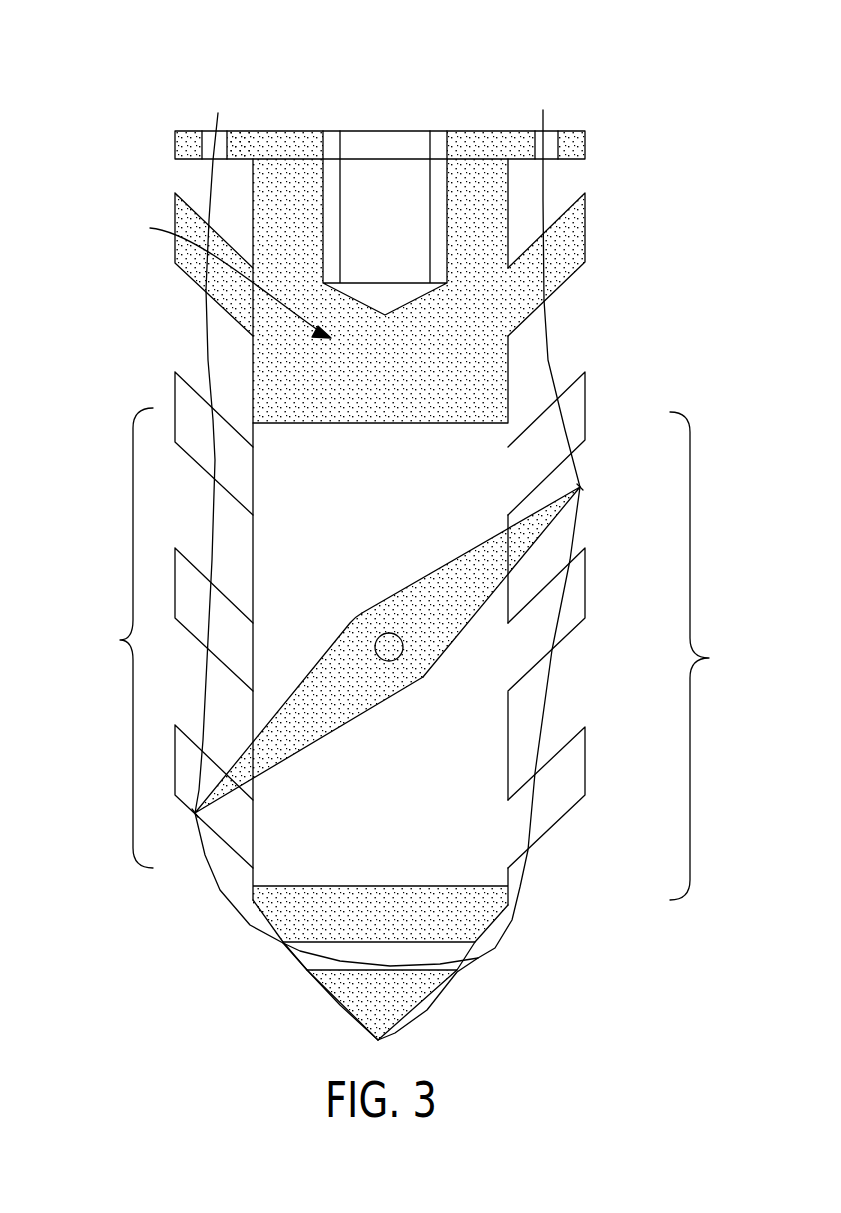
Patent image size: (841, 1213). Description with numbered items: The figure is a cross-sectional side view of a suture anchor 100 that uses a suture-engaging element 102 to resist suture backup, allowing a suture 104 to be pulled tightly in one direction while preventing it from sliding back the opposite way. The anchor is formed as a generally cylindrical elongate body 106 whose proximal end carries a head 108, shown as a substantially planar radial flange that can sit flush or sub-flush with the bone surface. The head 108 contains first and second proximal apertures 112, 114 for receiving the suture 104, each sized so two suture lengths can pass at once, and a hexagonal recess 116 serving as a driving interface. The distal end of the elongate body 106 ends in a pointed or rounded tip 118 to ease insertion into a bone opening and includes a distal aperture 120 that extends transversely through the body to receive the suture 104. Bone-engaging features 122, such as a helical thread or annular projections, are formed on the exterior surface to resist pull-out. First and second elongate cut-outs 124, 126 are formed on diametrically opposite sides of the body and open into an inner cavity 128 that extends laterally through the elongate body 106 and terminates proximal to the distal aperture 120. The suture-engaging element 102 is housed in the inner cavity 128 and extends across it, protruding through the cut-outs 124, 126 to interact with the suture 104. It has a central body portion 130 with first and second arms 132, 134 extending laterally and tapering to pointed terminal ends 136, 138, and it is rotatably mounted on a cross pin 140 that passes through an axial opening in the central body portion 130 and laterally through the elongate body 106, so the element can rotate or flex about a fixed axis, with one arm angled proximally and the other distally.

The suture anchor 100 is at (70, 66).
The suture-engaging element 102 is at (438, 620).
The suture 104 is at (208, 194).
The elongate body 106 is at (224, 274).
The head 108 is at (262, 140).
The first proximal aperture 112 is at (212, 130).
The second proximal aperture 114 is at (543, 132).
The hexagonal recess 116 is at (388, 195).
The tip 118 is at (390, 1018).
The distal aperture 120 is at (413, 950).
The bone-engaging features 122 is at (573, 226).
The first elongate cut-out 124 is at (166, 530).
The second elongate cut-out 126 is at (709, 656).
The inner cavity 128 is at (380, 829).
The central body portion 130 is at (378, 618).
The first arm 132 is at (330, 690).
The second arm 134 is at (468, 565).
The pointed terminal end 136 is at (195, 815).
The pointed terminal end 138 is at (582, 486).
The cross pin 140 is at (389, 656).